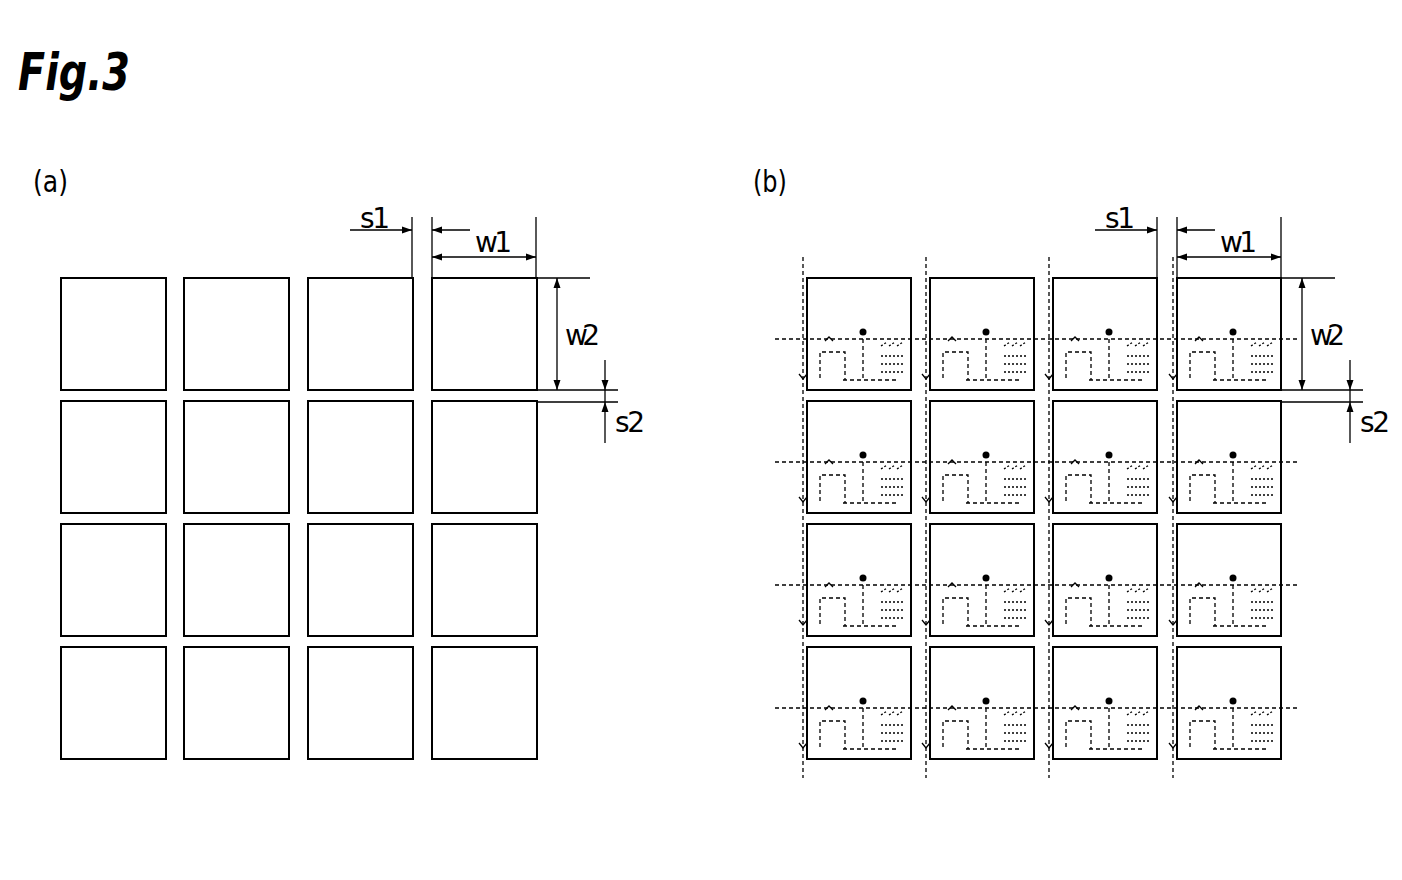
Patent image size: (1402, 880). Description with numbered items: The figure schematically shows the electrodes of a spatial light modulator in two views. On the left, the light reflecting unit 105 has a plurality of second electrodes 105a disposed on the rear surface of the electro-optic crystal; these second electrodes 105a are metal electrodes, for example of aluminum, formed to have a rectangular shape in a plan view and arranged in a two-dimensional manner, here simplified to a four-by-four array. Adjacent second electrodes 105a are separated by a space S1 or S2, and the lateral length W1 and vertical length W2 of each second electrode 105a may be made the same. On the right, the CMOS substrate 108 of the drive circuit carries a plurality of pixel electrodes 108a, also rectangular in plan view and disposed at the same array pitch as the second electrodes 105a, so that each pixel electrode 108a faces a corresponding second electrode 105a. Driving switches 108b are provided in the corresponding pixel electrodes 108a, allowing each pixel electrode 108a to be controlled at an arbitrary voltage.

The light reflecting unit 105 is at (310, 210).
The second electrode 105a is at (123, 298).
The CMOS substrate 108 is at (1079, 210).
The pixel electrode 108a is at (859, 298).
The driving switch 108b is at (826, 760).